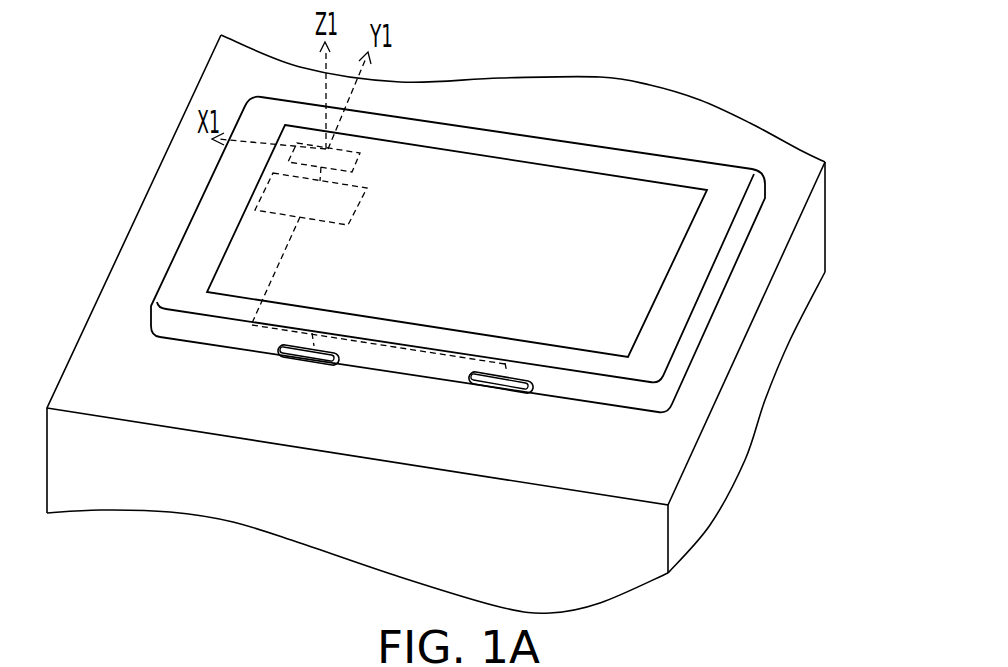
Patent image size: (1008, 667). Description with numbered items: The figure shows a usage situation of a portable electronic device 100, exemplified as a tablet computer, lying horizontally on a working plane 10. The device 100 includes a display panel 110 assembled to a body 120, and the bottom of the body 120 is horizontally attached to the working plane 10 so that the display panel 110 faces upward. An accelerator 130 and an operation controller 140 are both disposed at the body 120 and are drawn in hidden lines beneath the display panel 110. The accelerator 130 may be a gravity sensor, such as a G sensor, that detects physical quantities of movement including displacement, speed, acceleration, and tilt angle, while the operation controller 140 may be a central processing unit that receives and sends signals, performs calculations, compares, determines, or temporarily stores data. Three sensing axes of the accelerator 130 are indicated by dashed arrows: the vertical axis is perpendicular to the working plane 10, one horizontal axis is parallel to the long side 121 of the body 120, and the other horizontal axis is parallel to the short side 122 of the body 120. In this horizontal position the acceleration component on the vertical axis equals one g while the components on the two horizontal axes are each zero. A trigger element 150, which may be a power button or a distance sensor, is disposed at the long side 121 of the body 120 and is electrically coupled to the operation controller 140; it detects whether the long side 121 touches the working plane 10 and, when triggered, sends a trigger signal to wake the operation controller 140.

The working plane 10 is at (793, 170).
The portable electronic device 100 is at (757, 266).
The display panel 110 is at (472, 167).
The body 120 is at (698, 320).
The long side 121 is at (607, 398).
The short side 122 is at (180, 229).
The accelerator 130 is at (360, 158).
The operation controller 140 is at (264, 192).
The trigger element 150 is at (503, 393).